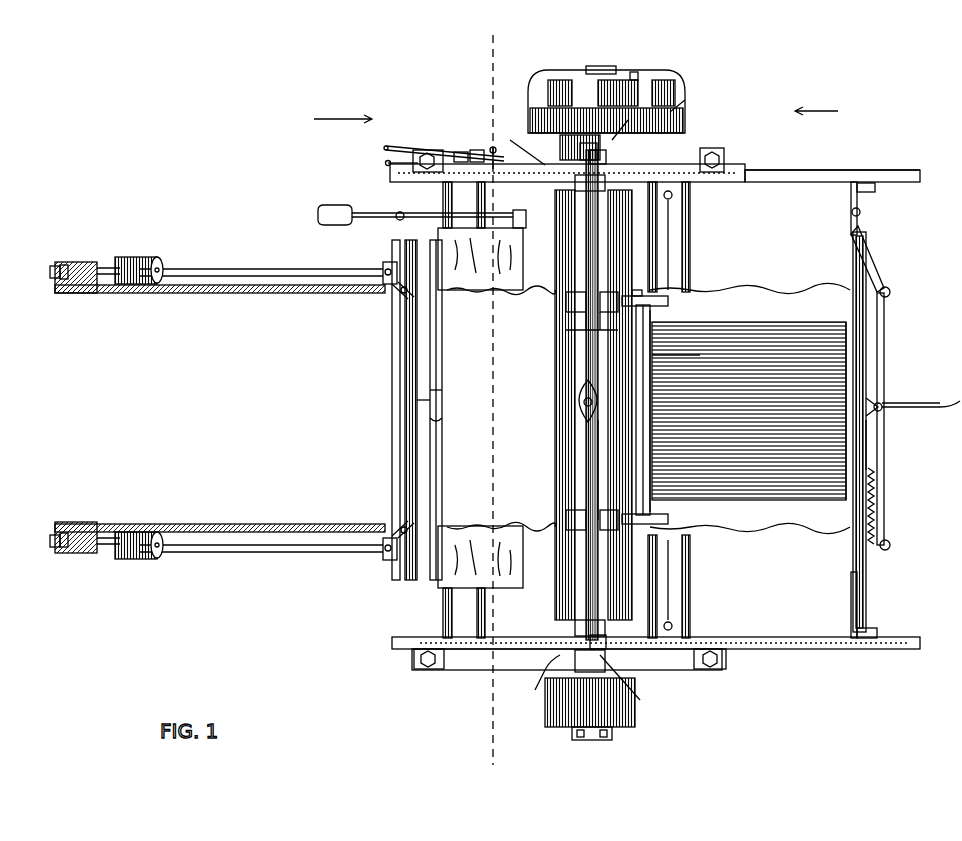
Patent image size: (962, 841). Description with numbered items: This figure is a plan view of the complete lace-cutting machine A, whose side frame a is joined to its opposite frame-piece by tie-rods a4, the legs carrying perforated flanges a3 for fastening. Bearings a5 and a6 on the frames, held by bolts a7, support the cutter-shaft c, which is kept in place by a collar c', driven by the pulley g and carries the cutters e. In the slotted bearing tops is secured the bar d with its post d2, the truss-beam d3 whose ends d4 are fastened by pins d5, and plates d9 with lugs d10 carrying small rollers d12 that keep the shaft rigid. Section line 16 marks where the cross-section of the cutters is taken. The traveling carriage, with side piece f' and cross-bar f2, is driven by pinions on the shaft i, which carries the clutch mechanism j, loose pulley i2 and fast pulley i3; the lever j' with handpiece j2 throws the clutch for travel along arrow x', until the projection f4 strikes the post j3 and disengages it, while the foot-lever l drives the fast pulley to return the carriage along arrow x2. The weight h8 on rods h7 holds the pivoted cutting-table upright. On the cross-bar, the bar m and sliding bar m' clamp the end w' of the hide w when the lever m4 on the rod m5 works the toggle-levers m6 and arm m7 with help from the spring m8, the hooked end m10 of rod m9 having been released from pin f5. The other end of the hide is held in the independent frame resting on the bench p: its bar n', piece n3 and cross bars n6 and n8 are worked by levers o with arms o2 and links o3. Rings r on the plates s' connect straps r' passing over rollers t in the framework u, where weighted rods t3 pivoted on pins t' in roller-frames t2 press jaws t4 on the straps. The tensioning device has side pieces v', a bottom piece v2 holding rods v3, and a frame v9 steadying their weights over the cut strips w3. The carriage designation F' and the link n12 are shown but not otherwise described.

The section line 16 is at (507, 400).
The arrow x' is at (343, 109).
The arrow x2 is at (816, 102).
The side frame a is at (500, 622).
The perforated flange a3 is at (726, 158).
The bolt a7 is at (610, 160).
The tie-rod a4 is at (443, 200).
The bearing a6 is at (525, 141).
The bearing a5 is at (563, 678).
The shaft i is at (578, 70).
The fast pulley i3 is at (634, 80).
The loose pulley i2 is at (686, 104).
The collar c' is at (607, 428).
The lever j' is at (621, 133).
The cutter-shaft c is at (592, 748).
The pulley g is at (636, 712).
The frame or bar d is at (567, 395).
The cutter e is at (565, 363).
The end of truss-beam d4 is at (578, 190).
The pin or bolt d5 is at (576, 433).
The small roller d12 is at (566, 298).
The perforated lug or ear d10 is at (586, 314).
The plate d9 is at (580, 322).
The post d2 is at (580, 406).
The tie-rod or truss-beam d3 is at (570, 458).
The side piece v' is at (658, 405).
The frame v9 is at (668, 300).
The rod v3 is at (660, 340).
The bottom piece v2 is at (676, 361).
The roller w3 is at (749, 411).
The hide w is at (648, 408).
The end of hide w' is at (887, 411).
The rod h7 is at (673, 194).
The weight h8 is at (672, 210).
The cutting-machine A is at (775, 224).
The frame F' is at (896, 594).
The side piece f' is at (832, 426).
The cross-bar f2 is at (851, 206).
The pin f5 is at (868, 192).
The hooked end m10 is at (860, 212).
The bar m is at (846, 432).
The rod m9 is at (880, 268).
The toggle-lever m6 is at (890, 293).
The rod or bar m5 is at (884, 332).
The lever or arm m7 is at (882, 402).
The lever m4 is at (922, 404).
The sliding bar m' is at (892, 445).
The spring m8 is at (876, 510).
The lever o is at (392, 364).
The cross piece or bar n8 is at (405, 388).
The bar n' is at (448, 410).
The cross piece or bar n6 is at (442, 392).
The link n12 is at (430, 400).
The bar or piece n3 is at (442, 422).
The table or bench p is at (480, 417).
The plate s' is at (387, 410).
The ring r is at (373, 412).
The link o3 is at (392, 288).
The projecting arm o2 is at (400, 296).
The framework u is at (100, 294).
The belt or strap r' is at (261, 409).
The weighted rod t3 is at (158, 266).
The wheel or roller t is at (63, 407).
The jaw t4 is at (50, 268).
The roller-frame t2 is at (62, 265).
The pin t' is at (97, 410).
The foot-lever l is at (318, 215).
The handpiece j2 is at (400, 146).
The finger or post j3 is at (493, 148).
The projection f4 is at (386, 164).
The clutch mechanism j is at (461, 142).